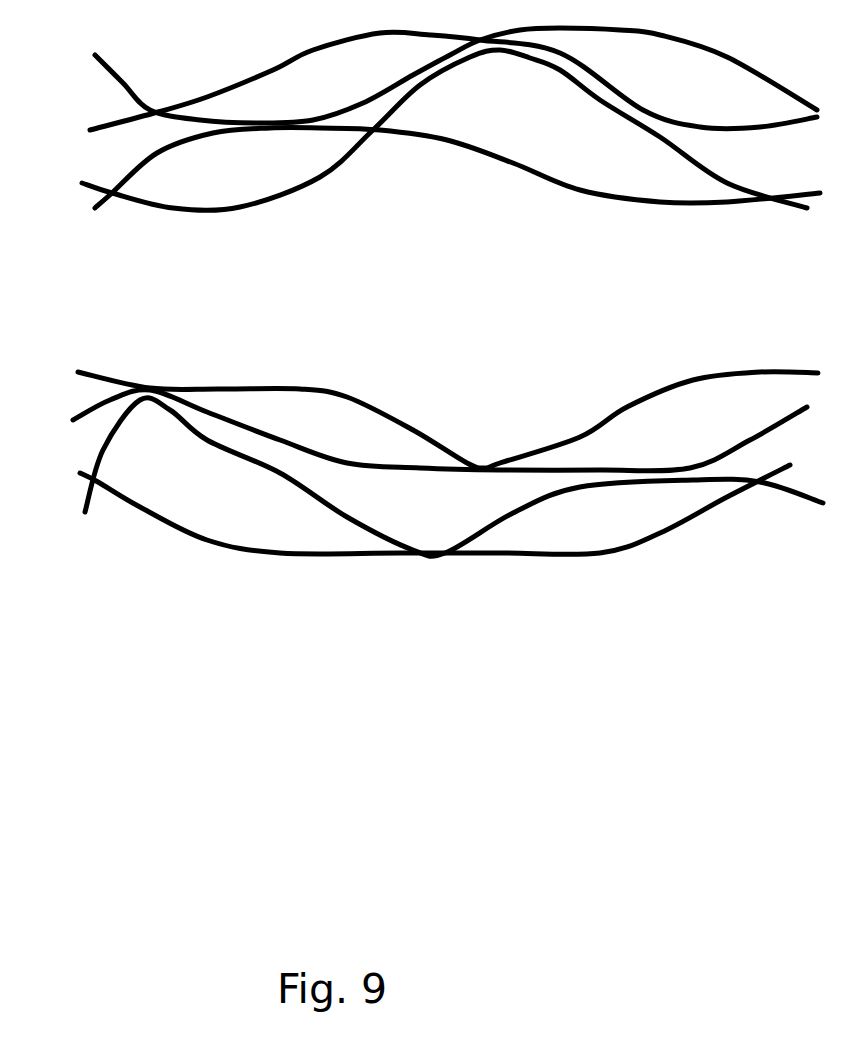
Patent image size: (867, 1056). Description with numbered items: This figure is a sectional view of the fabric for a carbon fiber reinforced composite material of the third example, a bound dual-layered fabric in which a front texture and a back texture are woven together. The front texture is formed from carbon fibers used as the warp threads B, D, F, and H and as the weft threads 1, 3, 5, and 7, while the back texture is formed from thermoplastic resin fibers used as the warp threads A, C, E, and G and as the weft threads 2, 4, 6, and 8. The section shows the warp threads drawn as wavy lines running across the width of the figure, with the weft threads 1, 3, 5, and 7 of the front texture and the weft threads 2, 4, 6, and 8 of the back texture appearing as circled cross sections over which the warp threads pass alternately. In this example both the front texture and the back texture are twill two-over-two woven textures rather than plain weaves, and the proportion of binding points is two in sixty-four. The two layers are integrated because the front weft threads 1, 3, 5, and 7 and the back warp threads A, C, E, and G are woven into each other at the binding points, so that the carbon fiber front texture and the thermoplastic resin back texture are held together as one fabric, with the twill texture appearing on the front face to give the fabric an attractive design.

The warp thread A is at (438, 197).
The warp thread B is at (436, 90).
The warp thread C is at (431, 130).
The warp thread D is at (436, 75).
The warp thread E is at (418, 503).
The warp thread F is at (432, 407).
The warp thread G is at (434, 478).
The warp thread H is at (426, 430).
The weft thread 1 is at (158, 256).
The weft thread 2 is at (245, 347).
The weft thread 3 is at (333, 256).
The weft thread 4 is at (420, 347).
The weft thread 5 is at (507, 259).
The weft thread 6 is at (594, 345).
The weft thread 7 is at (681, 257).
The weft thread 8 is at (767, 345).